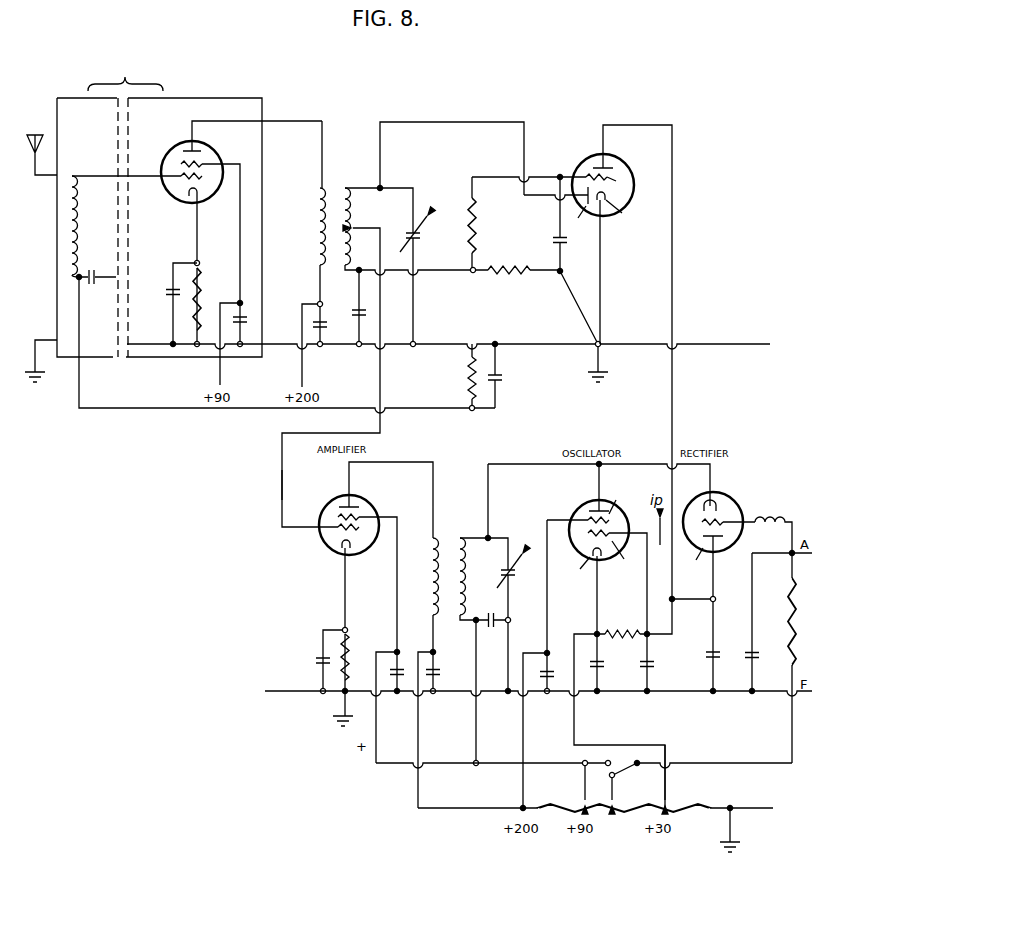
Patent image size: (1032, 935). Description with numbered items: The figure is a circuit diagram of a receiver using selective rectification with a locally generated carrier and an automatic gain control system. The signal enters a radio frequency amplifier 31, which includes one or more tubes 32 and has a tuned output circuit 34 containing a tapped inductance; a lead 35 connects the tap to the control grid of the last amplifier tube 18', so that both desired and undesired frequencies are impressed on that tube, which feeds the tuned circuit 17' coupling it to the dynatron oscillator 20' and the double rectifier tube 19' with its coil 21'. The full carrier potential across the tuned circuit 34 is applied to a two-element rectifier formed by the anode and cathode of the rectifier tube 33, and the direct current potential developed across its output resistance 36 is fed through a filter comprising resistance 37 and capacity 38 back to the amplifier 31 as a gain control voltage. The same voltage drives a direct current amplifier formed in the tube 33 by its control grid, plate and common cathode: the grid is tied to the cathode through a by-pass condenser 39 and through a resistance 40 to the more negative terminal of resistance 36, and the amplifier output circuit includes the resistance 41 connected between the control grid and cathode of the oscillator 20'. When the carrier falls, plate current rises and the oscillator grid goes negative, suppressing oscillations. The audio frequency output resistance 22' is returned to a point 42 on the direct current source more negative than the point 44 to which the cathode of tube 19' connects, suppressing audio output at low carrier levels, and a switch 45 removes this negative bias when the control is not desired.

The radio frequency amplifier 31 is at (184, 106).
The tube 32 is at (184, 147).
The rectifier tube 33 is at (588, 161).
The tuned output circuit 34 is at (403, 324).
The lead 35 is at (282, 484).
The output resistance 36 is at (516, 278).
The resistance 37 is at (458, 377).
The capacity 38 is at (503, 386).
The by-pass condenser 39 is at (554, 238).
The resistance 40 is at (468, 199).
The resistance 41 is at (626, 637).
The point 42 is at (614, 805).
The point 44 is at (581, 803).
The switch 45 is at (622, 761).
The oscillator tuned transformer 17' is at (453, 636).
The last amplifier tube 18' is at (374, 594).
The double rectifier tube 19' is at (717, 584).
The dynatron oscillator 20' is at (599, 634).
The coil 21' is at (773, 521).
The audio frequency output resistance 22' is at (779, 658).